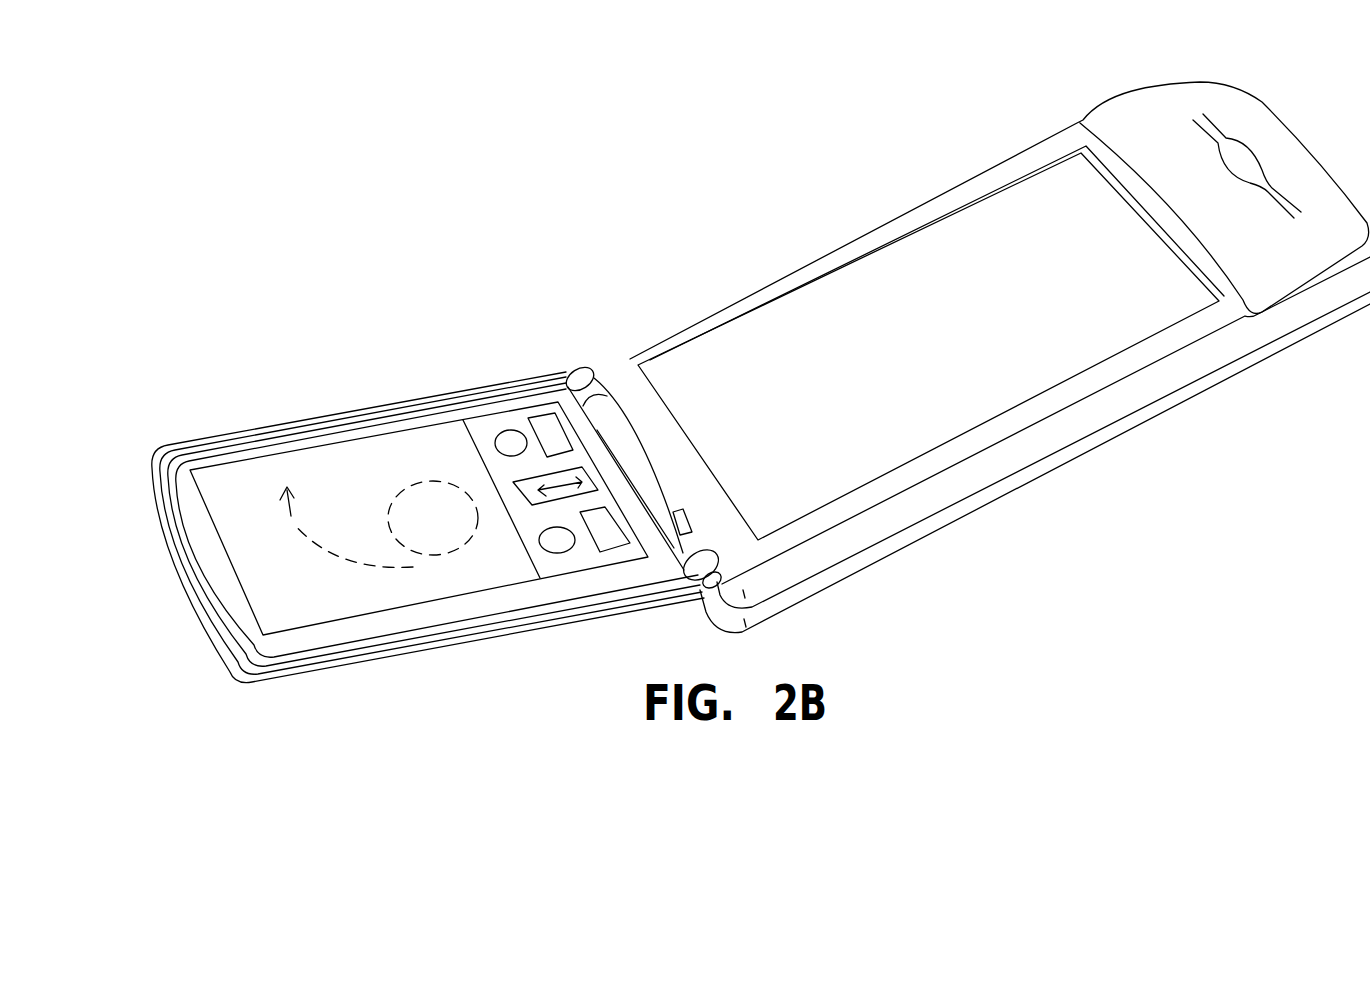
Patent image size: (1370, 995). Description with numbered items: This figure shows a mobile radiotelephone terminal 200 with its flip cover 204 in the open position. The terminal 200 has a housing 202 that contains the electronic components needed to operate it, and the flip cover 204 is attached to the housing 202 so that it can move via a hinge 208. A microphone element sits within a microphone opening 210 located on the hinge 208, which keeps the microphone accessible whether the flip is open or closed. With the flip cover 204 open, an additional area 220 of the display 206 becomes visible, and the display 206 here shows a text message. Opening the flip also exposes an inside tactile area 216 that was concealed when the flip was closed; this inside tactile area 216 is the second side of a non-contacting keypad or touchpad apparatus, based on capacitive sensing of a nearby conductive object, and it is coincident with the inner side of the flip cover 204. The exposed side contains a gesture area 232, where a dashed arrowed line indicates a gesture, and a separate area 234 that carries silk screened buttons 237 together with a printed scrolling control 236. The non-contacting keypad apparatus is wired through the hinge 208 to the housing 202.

The terminal 200 is at (748, 148).
The housing 202 is at (1022, 514).
The flip cover 204 is at (508, 641).
The display 206 is at (1057, 123).
The hinge 208 is at (616, 416).
The microphone opening 210 is at (693, 517).
The inside tactile area 216 is at (172, 428).
The additional area of display 220 is at (975, 180).
The gesture area 232 is at (332, 458).
The button area 234 is at (517, 420).
The printed scrolling control 236 is at (523, 478).
The silk screened buttons 237 is at (613, 540).